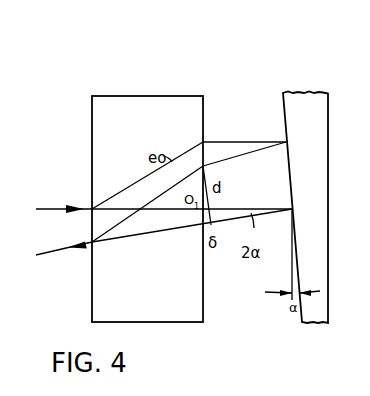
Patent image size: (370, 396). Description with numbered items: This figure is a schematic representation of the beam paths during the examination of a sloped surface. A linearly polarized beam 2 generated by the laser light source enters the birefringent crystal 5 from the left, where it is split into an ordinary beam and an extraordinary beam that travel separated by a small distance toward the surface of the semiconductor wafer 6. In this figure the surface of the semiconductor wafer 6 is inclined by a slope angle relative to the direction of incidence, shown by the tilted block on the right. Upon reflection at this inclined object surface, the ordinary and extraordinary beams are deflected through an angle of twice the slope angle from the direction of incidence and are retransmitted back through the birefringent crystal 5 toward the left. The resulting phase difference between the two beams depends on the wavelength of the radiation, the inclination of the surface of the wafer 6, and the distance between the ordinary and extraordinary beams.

The linearly polarized beam 2 is at (55, 207).
The birefringent crystal 5 is at (196, 108).
The semiconductor wafer 6 is at (318, 106).